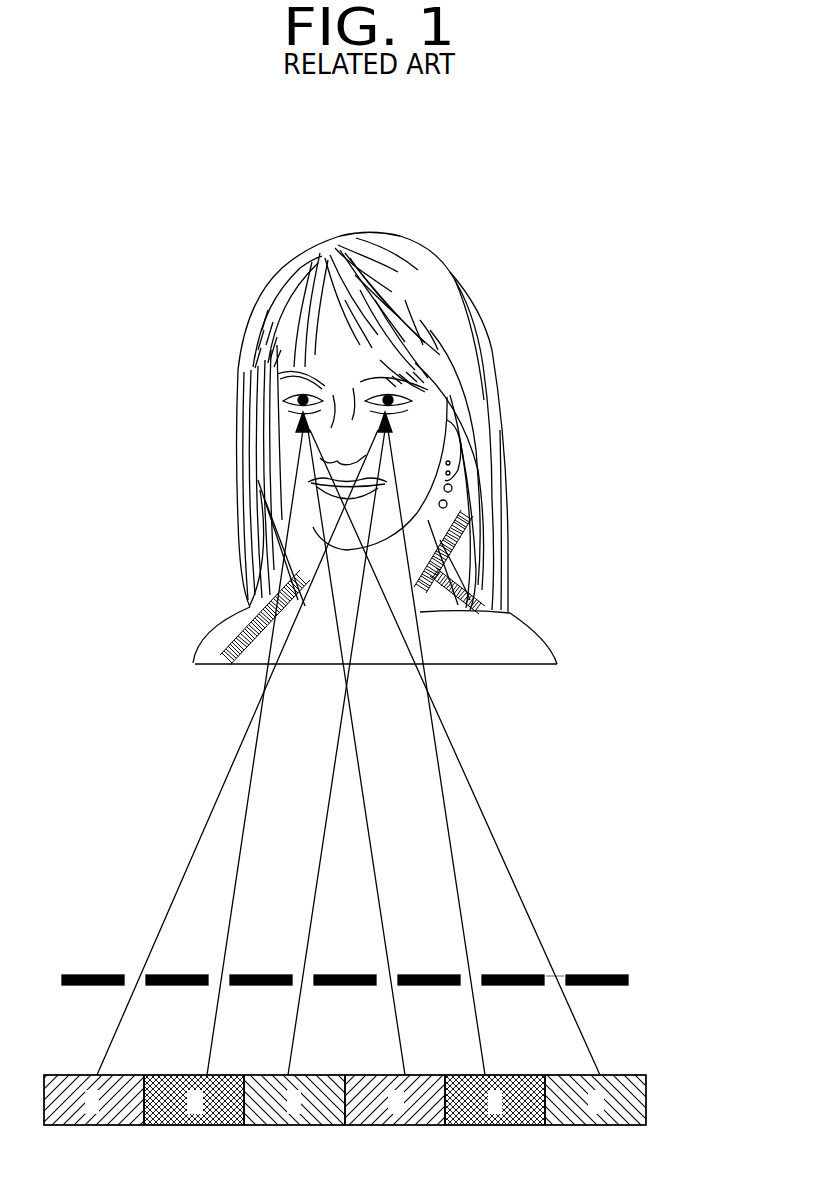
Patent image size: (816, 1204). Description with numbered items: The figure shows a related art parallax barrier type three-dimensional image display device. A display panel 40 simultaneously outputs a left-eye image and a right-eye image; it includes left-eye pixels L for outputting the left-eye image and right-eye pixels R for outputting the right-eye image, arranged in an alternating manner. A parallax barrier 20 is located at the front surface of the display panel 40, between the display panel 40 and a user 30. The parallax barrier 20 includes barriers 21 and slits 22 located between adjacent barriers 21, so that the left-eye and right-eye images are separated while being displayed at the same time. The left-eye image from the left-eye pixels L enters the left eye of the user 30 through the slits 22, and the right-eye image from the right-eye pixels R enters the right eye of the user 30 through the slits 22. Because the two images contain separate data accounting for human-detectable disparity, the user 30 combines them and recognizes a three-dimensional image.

The parallax barrier 20 is at (712, 932).
The barriers 21 is at (630, 980).
The slits 22 is at (563, 976).
The user 30 is at (538, 323).
The display panel 40 is at (647, 1100).